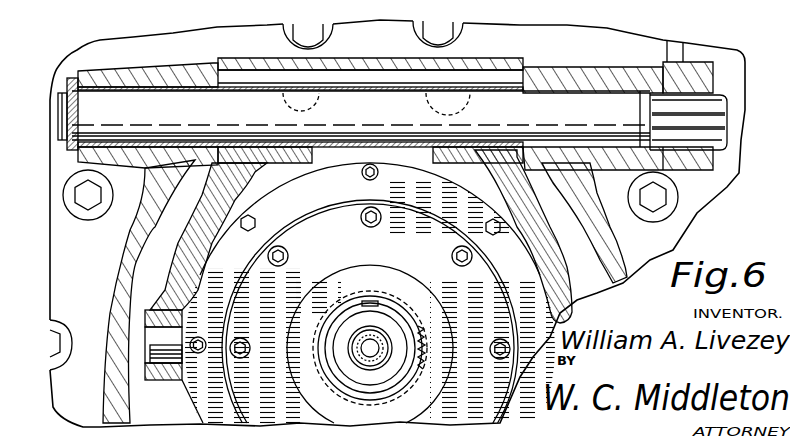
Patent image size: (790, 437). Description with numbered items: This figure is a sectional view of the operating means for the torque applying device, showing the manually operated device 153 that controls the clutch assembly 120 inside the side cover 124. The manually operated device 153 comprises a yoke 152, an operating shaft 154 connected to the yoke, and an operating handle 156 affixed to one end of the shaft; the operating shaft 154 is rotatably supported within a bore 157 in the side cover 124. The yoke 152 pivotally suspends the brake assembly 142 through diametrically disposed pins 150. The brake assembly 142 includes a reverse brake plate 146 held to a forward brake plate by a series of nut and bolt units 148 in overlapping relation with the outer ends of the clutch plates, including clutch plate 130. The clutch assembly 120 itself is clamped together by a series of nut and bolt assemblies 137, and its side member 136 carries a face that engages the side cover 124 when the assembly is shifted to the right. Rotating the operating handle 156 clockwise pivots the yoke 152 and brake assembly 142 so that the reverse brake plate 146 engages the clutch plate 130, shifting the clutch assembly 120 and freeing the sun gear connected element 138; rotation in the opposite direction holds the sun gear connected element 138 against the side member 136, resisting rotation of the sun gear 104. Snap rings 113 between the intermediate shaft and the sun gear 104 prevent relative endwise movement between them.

The sun gear 104 is at (413, 371).
The snap rings 113 is at (342, 332).
The clutch assembly 120 is at (345, 224).
The side cover 124 is at (590, 84).
The clutch plate 130 is at (500, 280).
The side member 136 is at (316, 236).
The nut and bolt assemblies 137 is at (279, 266).
The sun gear connected element 138 is at (433, 343).
The brake assembly 142 is at (228, 250).
The reverse brake plate 146 is at (180, 300).
The nut and bolt units 148 is at (369, 164).
The pins 150 is at (167, 352).
The yoke 152 is at (555, 257).
The manually operated device 153 is at (380, 82).
The operating shaft 154 is at (728, 122).
The operating handle 156 is at (688, 56).
The bore 157 is at (556, 92).